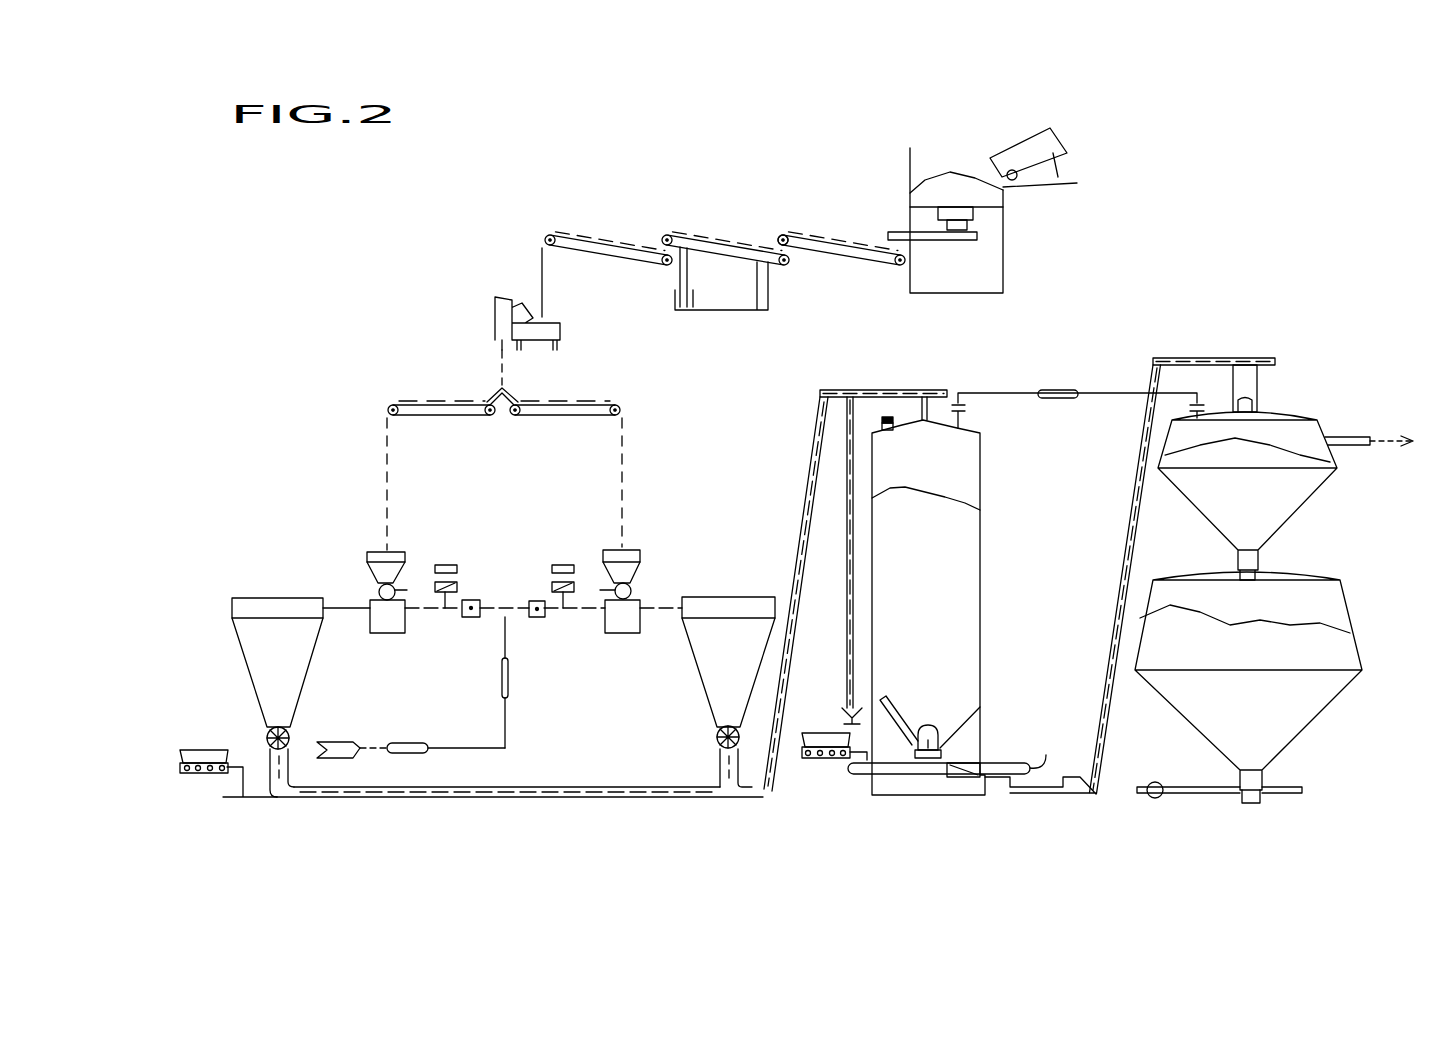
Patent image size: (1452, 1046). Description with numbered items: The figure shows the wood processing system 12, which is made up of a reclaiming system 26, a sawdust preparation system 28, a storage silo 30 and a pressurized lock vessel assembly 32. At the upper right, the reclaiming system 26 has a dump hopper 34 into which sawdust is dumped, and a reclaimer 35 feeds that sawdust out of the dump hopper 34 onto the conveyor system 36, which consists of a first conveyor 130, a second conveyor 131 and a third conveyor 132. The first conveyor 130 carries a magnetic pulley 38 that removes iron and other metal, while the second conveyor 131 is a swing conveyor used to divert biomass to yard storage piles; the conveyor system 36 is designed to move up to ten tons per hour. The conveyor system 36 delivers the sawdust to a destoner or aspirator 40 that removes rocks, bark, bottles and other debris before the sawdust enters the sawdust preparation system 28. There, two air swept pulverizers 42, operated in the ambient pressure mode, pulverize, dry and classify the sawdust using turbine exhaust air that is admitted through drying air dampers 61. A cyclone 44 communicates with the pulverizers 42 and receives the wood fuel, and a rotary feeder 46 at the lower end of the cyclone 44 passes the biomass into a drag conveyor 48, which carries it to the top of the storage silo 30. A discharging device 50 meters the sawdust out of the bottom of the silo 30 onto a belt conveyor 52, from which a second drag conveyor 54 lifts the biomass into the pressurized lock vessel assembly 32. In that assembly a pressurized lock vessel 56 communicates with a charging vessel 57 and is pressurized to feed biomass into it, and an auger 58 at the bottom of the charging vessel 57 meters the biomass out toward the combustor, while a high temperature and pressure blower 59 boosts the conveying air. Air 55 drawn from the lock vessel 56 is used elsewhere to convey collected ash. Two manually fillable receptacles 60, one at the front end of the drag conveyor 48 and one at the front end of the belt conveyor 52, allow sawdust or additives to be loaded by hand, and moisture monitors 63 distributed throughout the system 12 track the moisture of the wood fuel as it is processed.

The wood processing system 12 is at (1177, 133).
The reclaiming system 26 is at (1008, 175).
The sawdust preparation system 28 is at (340, 549).
The storage silo 30 is at (935, 485).
The pressurized lock vessel assembly 32 is at (1425, 351).
The dump hopper 34 is at (990, 215).
The reclaimer 35 is at (958, 240).
The conveyor system 36 is at (725, 200).
The magnetic pulley 38 is at (807, 243).
The destoner or aspirator 40 is at (437, 284).
The air swept pulverizer 42 is at (415, 558).
The cyclone 44 is at (232, 640).
The rotary feeder 46 is at (267, 740).
The drag conveyor 48 is at (420, 797).
The discharging device 50 is at (883, 730).
The belt conveyor 52 is at (957, 777).
The drag conveyor 54 is at (1117, 578).
The air 55 is at (1393, 450).
The pressurized lock vessel 56 is at (1258, 512).
The charging vessel 57 is at (1267, 665).
The auger 58 is at (1245, 805).
The high temperature and pressure blower 59 is at (1157, 798).
The manually fillable receptacle 60 is at (200, 760).
The drying air dampers 61 is at (537, 603).
The moisture monitor 63 is at (277, 795).
The first conveyor 130 is at (822, 242).
The second conveyor 131 is at (730, 250).
The third conveyor 132 is at (580, 243).